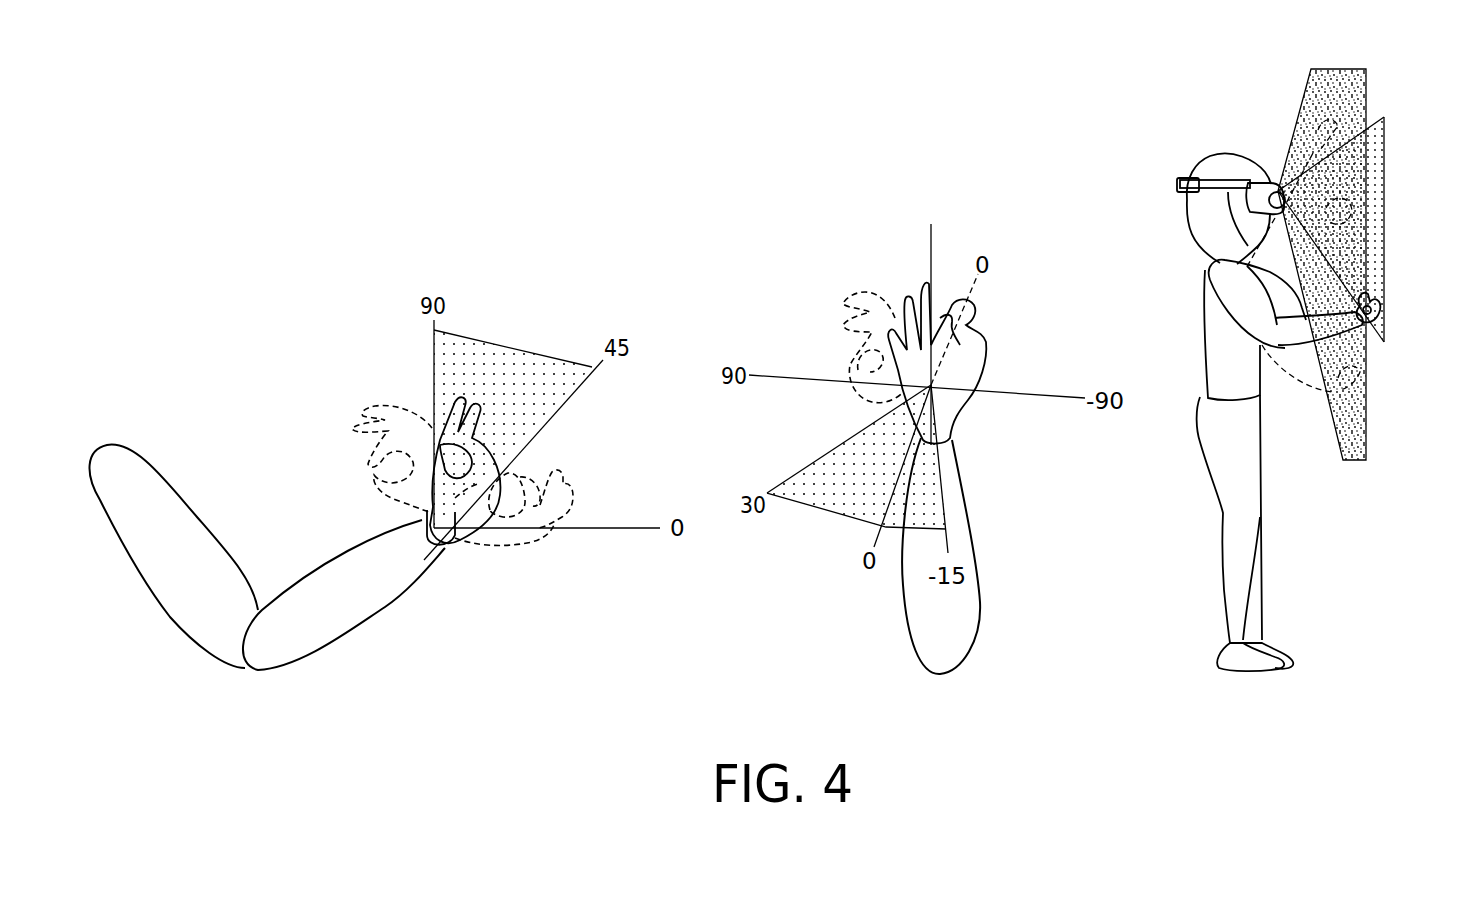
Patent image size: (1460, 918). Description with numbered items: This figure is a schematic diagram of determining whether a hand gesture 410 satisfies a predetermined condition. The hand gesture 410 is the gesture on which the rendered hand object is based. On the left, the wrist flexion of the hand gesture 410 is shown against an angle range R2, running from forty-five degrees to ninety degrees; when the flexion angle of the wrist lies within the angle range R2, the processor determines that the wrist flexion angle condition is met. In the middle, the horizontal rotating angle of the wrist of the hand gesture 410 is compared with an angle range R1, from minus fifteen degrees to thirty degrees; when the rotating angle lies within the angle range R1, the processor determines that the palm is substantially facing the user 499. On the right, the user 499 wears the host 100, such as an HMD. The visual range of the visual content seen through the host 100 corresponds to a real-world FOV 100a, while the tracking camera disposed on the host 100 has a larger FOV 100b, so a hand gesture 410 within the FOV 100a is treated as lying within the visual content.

The hand gesture 410 is at (485, 437).
The angle range R1 is at (849, 497).
The angle range R2 is at (541, 378).
The host 100 is at (1266, 190).
The FOV 100a is at (1383, 201).
The FOV 100b is at (1359, 91).
The user 499 is at (1196, 239).